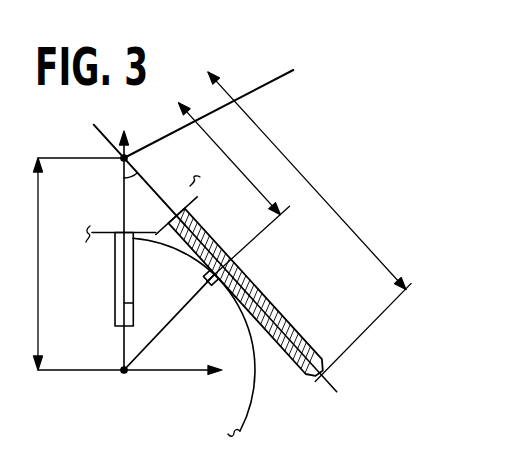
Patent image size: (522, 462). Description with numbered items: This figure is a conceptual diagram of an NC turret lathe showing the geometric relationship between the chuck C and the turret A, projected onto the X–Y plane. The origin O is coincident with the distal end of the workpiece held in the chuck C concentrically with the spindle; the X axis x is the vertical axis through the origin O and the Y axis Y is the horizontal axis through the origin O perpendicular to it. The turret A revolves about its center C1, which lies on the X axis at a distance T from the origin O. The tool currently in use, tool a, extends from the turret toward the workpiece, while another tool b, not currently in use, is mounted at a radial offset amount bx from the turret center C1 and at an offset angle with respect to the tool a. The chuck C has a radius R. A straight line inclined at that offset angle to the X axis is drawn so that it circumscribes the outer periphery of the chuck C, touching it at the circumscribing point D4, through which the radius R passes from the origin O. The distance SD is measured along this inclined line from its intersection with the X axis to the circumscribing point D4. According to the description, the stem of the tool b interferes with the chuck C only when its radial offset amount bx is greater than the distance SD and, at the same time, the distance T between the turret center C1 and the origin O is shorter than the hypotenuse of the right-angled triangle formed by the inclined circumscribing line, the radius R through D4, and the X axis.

The center of the turret C1 is at (147, 160).
The X axis x is at (123, 240).
The Y axis Y is at (181, 369).
The origin O is at (123, 387).
The distance between turret center and origin T is at (66, 264).
The distance from X-axis intersection to circumscribing point SD is at (234, 192).
The radial offset amount of tool b bx is at (309, 226).
The turret A is at (198, 187).
The tool not currently in use b is at (262, 292).
The tool in use a is at (133, 260).
The circumscribing point D4 is at (216, 297).
The radius of the chuck R is at (169, 322).
The chuck C is at (253, 391).